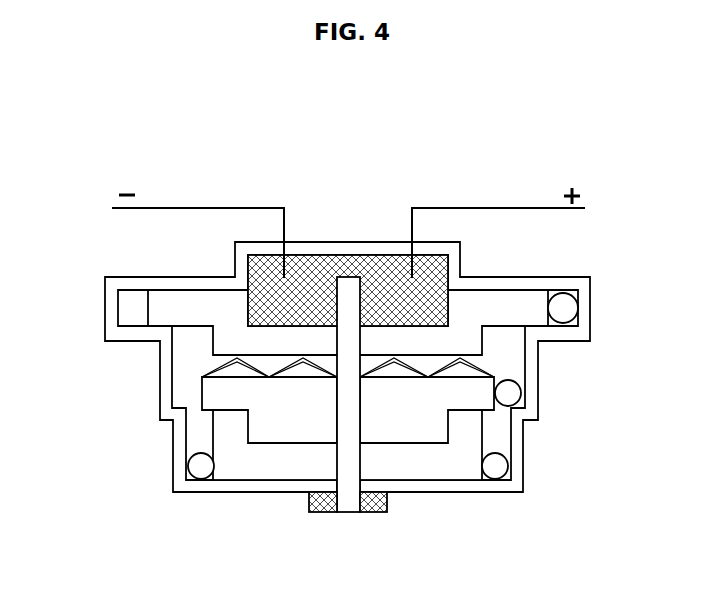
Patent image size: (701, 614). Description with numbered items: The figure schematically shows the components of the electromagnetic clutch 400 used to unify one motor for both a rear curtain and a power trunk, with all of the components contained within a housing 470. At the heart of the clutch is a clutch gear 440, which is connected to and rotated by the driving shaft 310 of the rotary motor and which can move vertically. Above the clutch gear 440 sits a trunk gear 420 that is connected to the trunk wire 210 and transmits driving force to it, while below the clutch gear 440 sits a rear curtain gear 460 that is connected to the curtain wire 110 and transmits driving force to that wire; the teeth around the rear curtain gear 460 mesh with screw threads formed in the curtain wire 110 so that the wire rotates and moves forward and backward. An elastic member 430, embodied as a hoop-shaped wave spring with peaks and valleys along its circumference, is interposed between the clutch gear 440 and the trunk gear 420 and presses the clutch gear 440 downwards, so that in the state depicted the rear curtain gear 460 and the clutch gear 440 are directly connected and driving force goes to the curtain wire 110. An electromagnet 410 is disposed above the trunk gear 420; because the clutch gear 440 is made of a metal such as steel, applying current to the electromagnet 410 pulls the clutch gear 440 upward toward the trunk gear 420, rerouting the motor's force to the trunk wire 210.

The electromagnetic clutch 400 is at (541, 129).
The electromagnet 410 is at (325, 272).
The trunk gear 420 is at (175, 311).
The elastic member 430 is at (220, 367).
The clutch gear 440 is at (222, 396).
The rear curtain gear 460 is at (249, 460).
The housing 470 is at (183, 452).
The curtain wire 110 is at (202, 465).
The trunk wire 210 is at (564, 308).
The driving shaft 310 is at (509, 393).